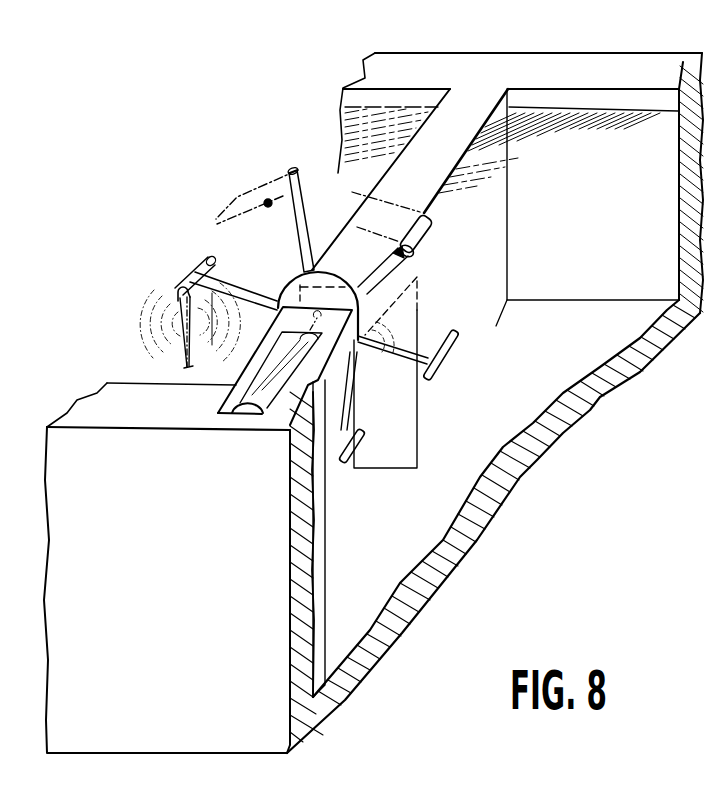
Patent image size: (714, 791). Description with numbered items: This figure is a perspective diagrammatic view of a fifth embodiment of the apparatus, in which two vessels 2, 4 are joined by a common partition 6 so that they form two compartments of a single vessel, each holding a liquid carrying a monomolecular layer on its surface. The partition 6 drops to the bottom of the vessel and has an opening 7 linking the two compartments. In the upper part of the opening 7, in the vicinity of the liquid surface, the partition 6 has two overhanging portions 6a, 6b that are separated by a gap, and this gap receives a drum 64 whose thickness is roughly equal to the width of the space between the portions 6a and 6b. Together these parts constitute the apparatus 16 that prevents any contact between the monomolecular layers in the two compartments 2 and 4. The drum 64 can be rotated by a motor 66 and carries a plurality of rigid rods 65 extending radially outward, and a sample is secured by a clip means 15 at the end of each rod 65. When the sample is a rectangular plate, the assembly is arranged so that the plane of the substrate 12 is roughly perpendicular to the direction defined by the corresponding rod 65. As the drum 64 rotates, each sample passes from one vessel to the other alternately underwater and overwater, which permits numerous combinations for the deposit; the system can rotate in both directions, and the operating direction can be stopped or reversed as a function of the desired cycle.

The vessel 2 is at (590, 200).
The vessel 4 is at (314, 110).
The partition 6 is at (462, 115).
The overhanging portion 6a is at (340, 377).
The overhanging portion 6b is at (413, 312).
The opening 7 is at (327, 593).
The substrate 12 is at (198, 306).
The clip means 15 is at (188, 278).
The apparatus 16 is at (243, 176).
The drum 64 is at (333, 268).
The rigid rod 65 is at (300, 247).
The motor 66 is at (252, 413).